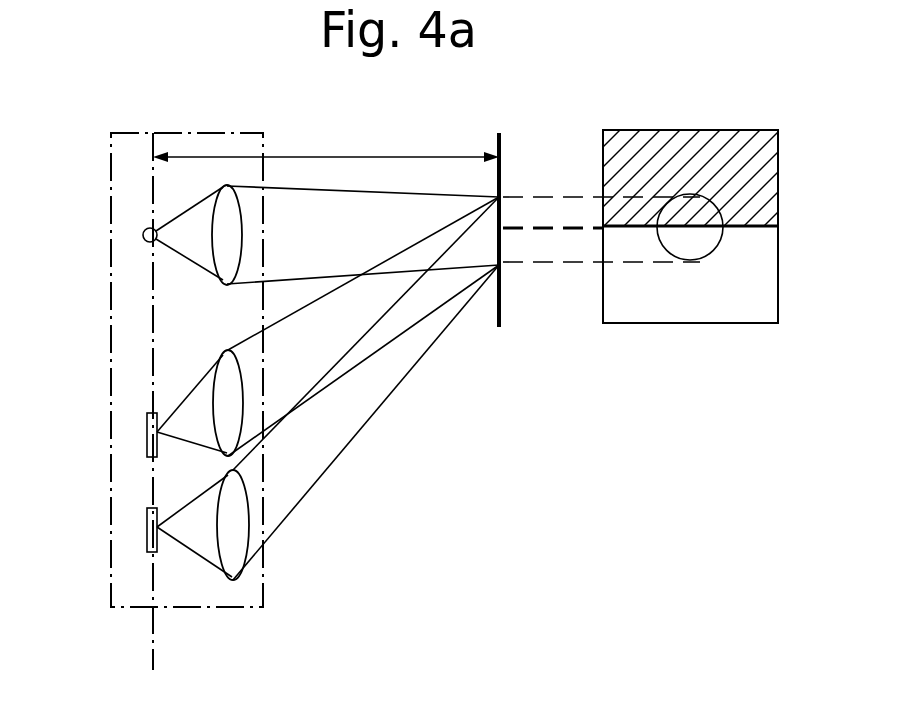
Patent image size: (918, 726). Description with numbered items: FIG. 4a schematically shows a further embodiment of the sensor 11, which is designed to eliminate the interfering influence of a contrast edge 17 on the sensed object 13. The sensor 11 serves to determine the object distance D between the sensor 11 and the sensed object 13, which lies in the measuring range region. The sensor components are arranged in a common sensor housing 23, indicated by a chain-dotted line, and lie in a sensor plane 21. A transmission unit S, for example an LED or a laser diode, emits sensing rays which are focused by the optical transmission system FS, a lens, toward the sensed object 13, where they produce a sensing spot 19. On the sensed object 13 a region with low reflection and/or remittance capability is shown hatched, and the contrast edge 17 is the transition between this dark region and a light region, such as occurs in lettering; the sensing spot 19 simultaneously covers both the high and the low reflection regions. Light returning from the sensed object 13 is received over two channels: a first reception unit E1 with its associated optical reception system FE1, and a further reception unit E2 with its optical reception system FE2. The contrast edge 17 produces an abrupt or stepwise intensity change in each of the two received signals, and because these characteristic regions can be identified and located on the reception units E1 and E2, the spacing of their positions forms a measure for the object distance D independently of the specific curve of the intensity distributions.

The sensor 11 is at (214, 328).
The sensed object 13 is at (503, 165).
The contrast edge 17 is at (758, 232).
The sensing spot 19 is at (700, 248).
The sensor plane 21 is at (153, 640).
The sensor housing 23 is at (270, 587).
The transmission unit S is at (143, 235).
The optical transmission system FS is at (227, 262).
The optical reception system FE1 is at (218, 372).
The reception unit E1 is at (147, 426).
The optical reception system FE2 is at (235, 574).
The reception unit E2 is at (147, 521).
The object distance D is at (349, 157).